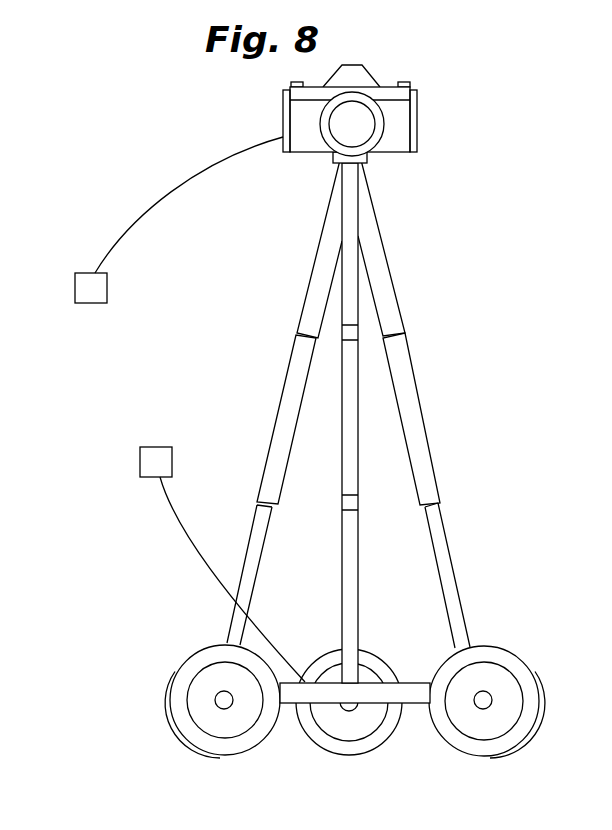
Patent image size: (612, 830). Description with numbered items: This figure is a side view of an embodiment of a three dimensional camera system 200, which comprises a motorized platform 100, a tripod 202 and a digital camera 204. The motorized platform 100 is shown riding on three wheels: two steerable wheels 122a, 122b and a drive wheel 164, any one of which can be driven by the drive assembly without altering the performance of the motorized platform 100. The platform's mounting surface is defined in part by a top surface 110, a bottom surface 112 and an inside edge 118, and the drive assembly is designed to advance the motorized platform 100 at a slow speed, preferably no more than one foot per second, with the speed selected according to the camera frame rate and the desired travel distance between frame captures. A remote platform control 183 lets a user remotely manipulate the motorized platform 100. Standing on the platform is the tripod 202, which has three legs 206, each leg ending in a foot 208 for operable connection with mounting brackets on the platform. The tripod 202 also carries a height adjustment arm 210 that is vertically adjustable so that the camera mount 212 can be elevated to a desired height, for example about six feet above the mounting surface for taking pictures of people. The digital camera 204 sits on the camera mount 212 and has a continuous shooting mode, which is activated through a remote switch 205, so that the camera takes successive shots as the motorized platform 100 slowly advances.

The 3D camera system 200 is at (480, 238).
The digital camera 204 is at (417, 123).
The camera mount 212 is at (367, 158).
The height adjustment arm 210 is at (327, 250).
The tripod 202 is at (355, 404).
The legs 206 is at (288, 397).
The remote switch 205 is at (85, 273).
The remote platform control 183 is at (152, 447).
The drive wheel 164 is at (360, 647).
The top surface 110 is at (375, 668).
The bottom surface 112 is at (415, 680).
The steerable wheel 122a is at (490, 753).
The steerable wheel 122b is at (163, 720).
The motorized platform 100 is at (287, 705).
The foot 208 is at (343, 672).
The inside edge 118 is at (396, 700).